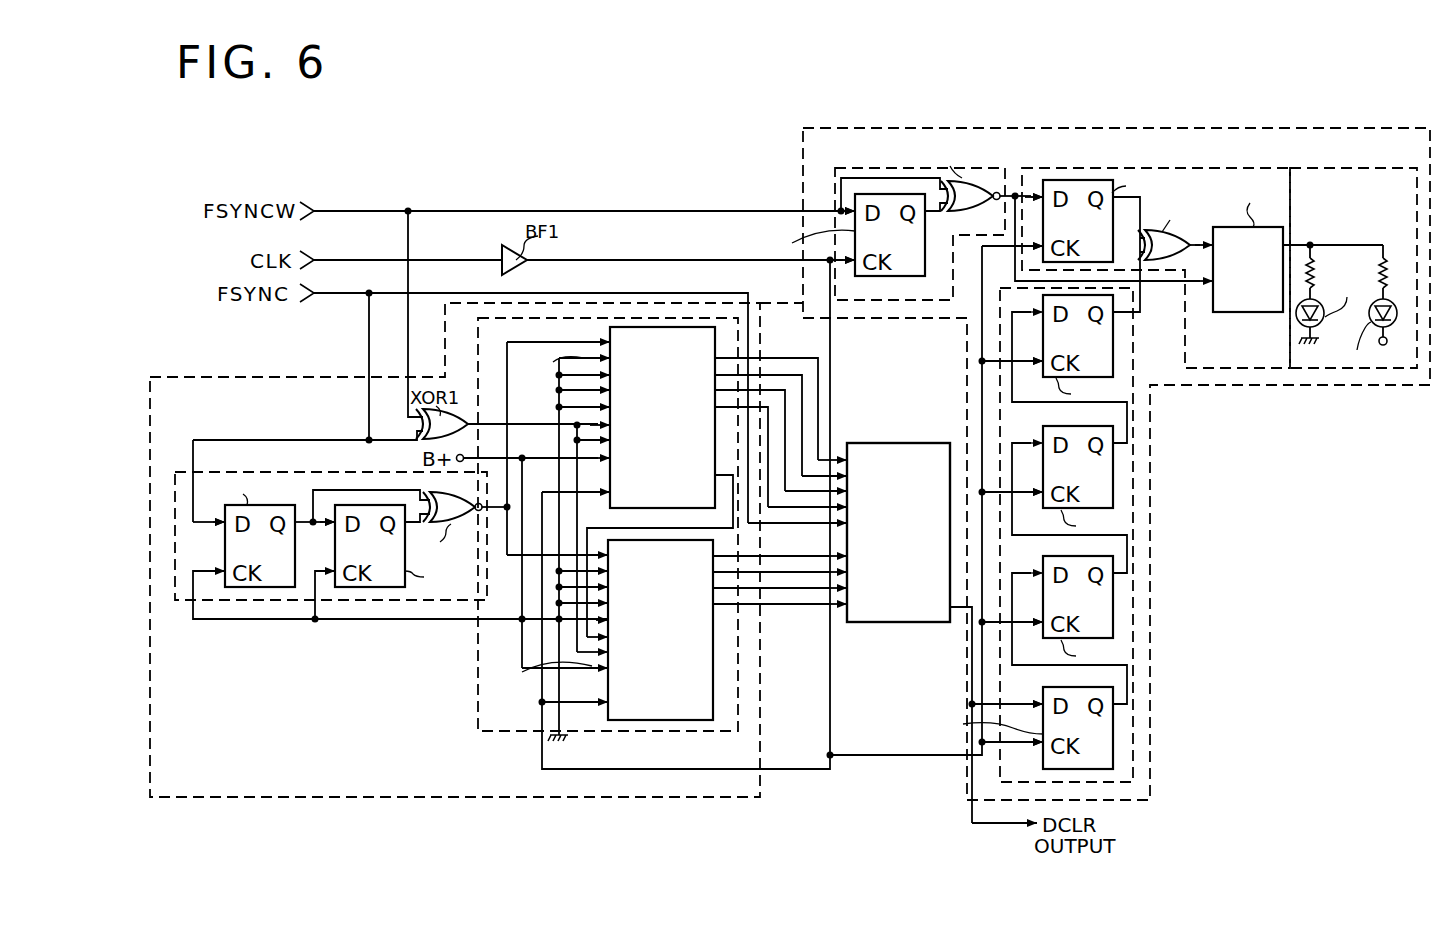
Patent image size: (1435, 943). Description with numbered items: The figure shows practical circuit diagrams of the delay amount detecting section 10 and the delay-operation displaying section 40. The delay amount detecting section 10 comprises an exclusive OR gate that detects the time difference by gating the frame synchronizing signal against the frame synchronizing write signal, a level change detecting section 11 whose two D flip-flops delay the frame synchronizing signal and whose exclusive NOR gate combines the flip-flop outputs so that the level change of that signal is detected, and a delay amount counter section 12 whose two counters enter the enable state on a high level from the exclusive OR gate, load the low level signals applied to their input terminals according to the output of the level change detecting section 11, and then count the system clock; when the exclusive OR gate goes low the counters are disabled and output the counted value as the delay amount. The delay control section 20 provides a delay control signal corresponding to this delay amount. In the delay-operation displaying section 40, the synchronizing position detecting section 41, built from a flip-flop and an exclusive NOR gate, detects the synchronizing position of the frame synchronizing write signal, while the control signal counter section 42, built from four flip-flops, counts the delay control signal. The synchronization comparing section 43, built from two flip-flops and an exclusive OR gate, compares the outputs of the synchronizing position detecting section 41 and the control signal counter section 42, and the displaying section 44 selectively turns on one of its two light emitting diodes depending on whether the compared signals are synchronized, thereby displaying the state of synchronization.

The delay amount detecting section 10 is at (295, 797).
The level change detecting section 11 is at (228, 600).
The delay amount counter section 12 is at (478, 633).
The delay control section 20 is at (900, 443).
The delay-operation displaying section 40 is at (875, 128).
The synchronizing position detecting section 41 is at (1005, 167).
The control signal counter section 42 is at (1133, 350).
The synchronization comparing section 43 is at (1118, 167).
The displaying section 44 is at (1367, 167).